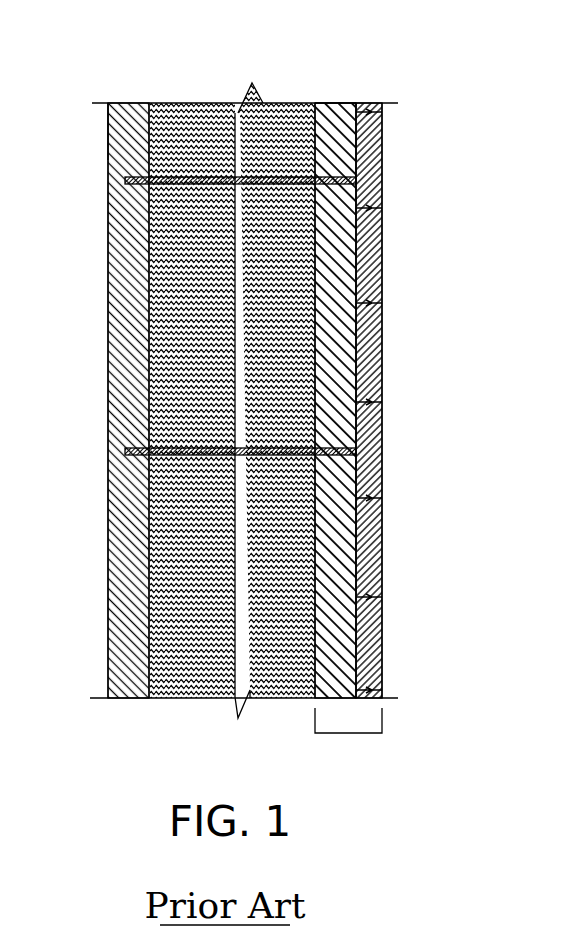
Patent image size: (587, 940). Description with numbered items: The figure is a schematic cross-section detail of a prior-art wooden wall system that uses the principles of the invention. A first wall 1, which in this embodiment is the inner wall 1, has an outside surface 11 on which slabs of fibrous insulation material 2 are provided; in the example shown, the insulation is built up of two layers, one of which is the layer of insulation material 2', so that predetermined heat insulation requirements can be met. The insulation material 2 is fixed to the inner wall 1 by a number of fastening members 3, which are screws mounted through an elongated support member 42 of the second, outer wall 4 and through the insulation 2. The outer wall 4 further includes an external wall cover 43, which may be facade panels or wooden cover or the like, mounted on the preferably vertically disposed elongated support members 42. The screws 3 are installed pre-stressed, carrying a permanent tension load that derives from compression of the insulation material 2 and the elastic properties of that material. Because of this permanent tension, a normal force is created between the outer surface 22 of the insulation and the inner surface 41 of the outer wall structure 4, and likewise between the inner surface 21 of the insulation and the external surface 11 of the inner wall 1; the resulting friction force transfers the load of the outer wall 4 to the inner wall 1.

The first wall 1 is at (122, 629).
The outside surface 11 is at (135, 132).
The insulation material 2 is at (232, 392).
The first layer of insulation material 2' is at (200, 441).
The inner surface of the insulation material 21 is at (152, 116).
The outer surface of the insulation material 22 is at (328, 113).
The fastening members 3 is at (283, 177).
The outer wall 4 is at (342, 733).
The inner surface of the outer wall structure 41 is at (313, 103).
The elongated support member 42 is at (328, 252).
The external wall cover 43 is at (368, 337).